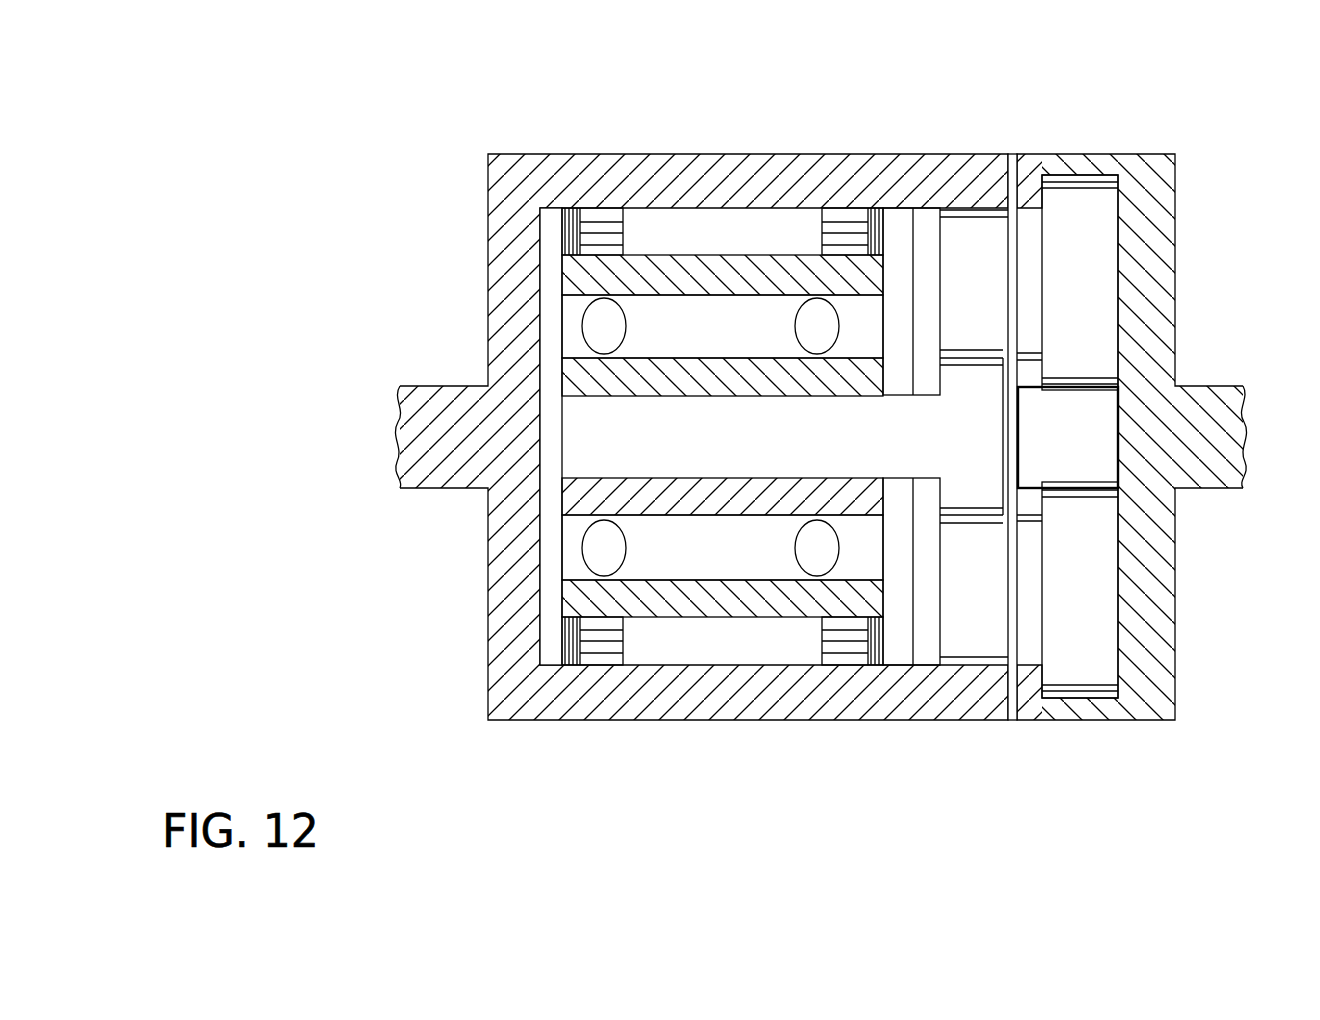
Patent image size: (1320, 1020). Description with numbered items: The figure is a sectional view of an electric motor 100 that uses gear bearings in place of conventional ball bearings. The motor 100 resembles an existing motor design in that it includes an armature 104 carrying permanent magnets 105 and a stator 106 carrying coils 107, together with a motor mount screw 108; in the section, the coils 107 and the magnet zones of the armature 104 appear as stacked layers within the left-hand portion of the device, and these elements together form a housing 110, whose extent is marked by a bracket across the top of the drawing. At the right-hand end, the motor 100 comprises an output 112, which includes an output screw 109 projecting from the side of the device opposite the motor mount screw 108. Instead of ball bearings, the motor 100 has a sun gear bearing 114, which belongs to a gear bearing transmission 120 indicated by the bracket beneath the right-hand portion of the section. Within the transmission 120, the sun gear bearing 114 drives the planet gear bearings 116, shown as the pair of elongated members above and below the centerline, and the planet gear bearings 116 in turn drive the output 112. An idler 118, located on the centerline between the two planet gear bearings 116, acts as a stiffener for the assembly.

The electric motor 100 is at (444, 169).
The armature 104 is at (765, 316).
The permanent magnets 105 is at (580, 330).
The stator 106 is at (722, 228).
The coils 107 is at (598, 226).
The motor mount screw 108 is at (411, 385).
The output screw 109 is at (1218, 488).
The housing 110 is at (1005, 83).
The output 112 is at (1175, 83).
The sun gear bearing 114 is at (968, 488).
The planet gear bearings 116 is at (1092, 243).
The idler 118 is at (1073, 417).
The gear bearing transmission 120 is at (938, 750).